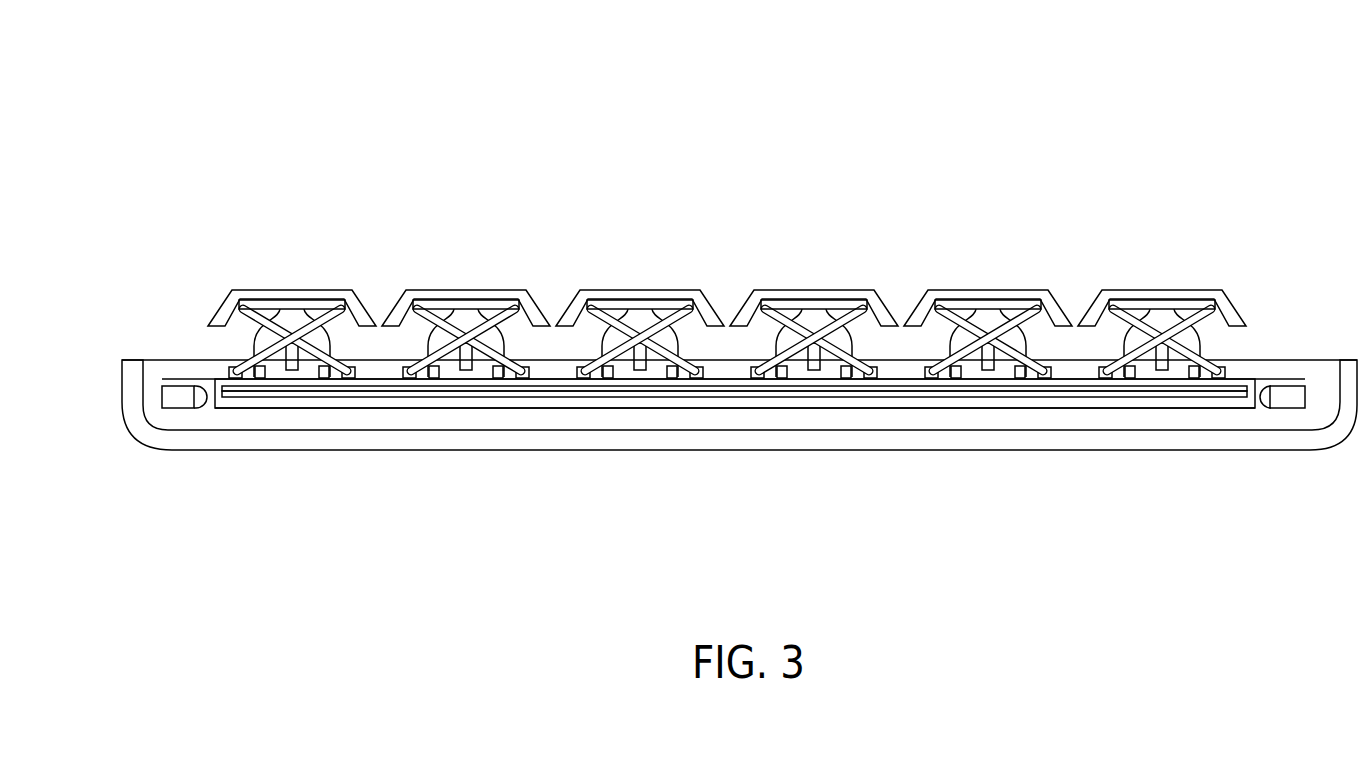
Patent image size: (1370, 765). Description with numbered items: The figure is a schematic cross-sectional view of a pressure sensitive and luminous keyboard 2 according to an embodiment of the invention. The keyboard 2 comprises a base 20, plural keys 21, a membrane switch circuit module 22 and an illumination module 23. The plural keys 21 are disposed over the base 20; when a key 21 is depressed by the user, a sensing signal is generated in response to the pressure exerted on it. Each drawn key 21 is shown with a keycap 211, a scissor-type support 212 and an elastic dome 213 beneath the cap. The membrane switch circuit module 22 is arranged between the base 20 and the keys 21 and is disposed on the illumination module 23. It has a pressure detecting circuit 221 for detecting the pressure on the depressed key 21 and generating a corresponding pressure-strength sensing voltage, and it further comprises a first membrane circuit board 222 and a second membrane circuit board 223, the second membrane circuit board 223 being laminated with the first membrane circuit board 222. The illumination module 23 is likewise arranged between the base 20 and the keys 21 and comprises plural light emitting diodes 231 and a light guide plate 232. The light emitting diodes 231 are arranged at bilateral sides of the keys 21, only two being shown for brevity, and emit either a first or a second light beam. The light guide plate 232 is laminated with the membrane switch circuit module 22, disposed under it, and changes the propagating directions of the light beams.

The pressure sensitive and luminous keyboard 2 is at (743, 75).
The base 20 is at (1175, 436).
The key 21 is at (742, 288).
The keycap 211 is at (1217, 292).
The scissor support 212 is at (1133, 313).
The elastic dome 213 is at (1163, 306).
The membrane switch circuit module 22 is at (205, 375).
The pressure detecting circuit 221 is at (952, 388).
The first membrane circuit board 222 is at (912, 382).
The second membrane circuit board 223 is at (1008, 393).
The illumination module 23 is at (1250, 426).
The light emitting diode 231 is at (181, 403).
The light guide plate 232 is at (1063, 400).